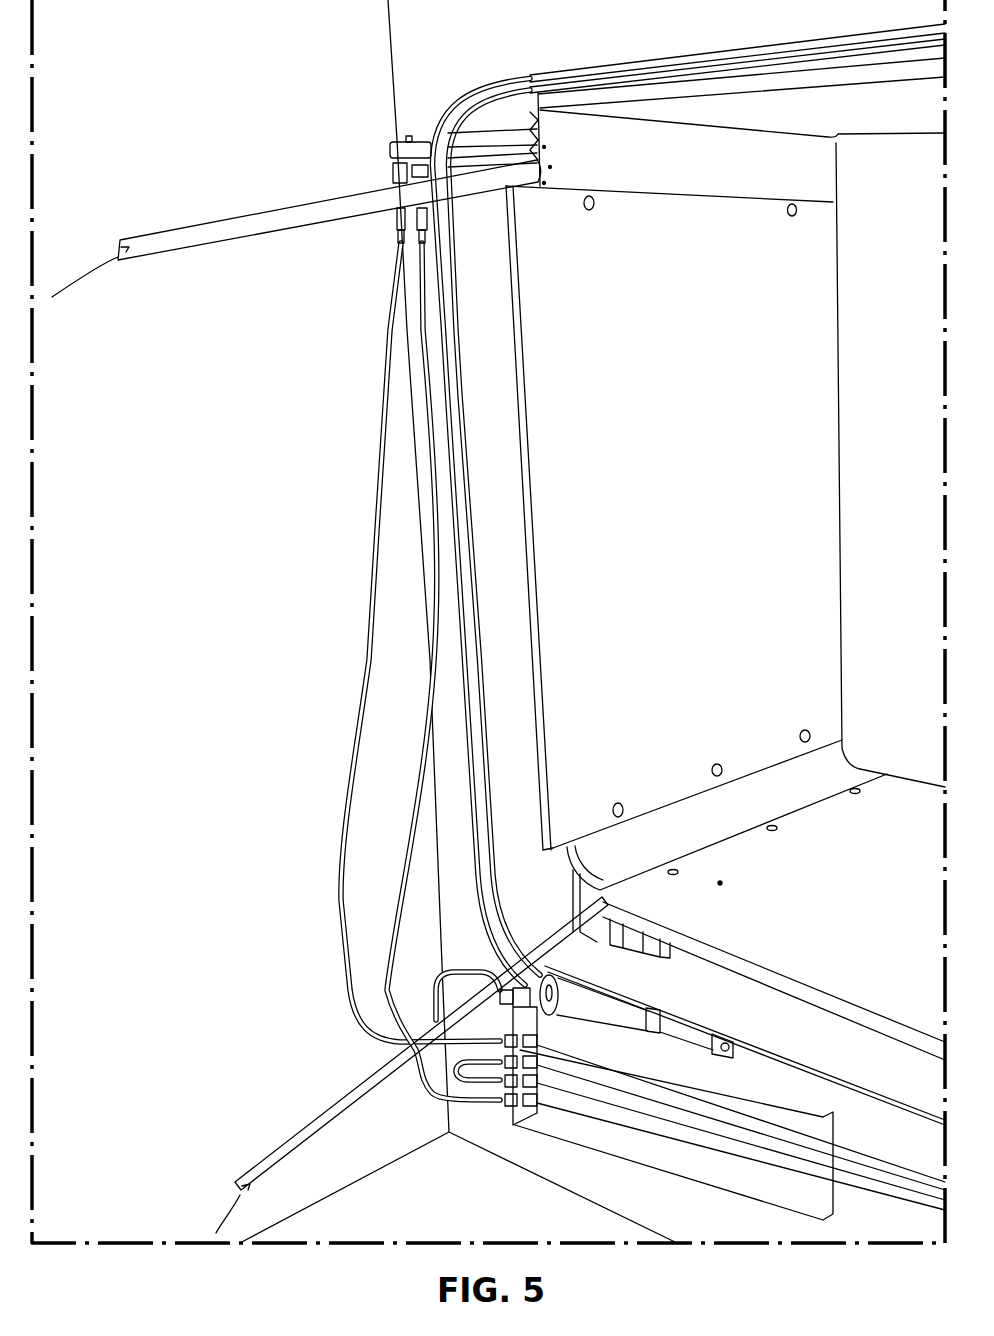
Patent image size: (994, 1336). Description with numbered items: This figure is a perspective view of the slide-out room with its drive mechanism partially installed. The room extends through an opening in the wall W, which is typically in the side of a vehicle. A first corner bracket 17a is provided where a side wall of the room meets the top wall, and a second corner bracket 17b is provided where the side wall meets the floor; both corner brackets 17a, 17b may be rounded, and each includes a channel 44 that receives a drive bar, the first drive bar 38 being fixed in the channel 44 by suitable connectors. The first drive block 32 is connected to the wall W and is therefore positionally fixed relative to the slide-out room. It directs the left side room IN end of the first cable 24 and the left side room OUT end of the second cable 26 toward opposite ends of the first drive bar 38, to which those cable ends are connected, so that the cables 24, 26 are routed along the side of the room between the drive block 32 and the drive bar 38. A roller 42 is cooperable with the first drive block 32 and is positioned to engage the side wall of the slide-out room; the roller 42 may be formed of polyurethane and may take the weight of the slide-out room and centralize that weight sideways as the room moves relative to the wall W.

The first corner bracket 17a is at (672, 162).
The second corner bracket 17b is at (780, 780).
The first cable 24 is at (430, 400).
The second cable 26 is at (377, 500).
The first drive block 32 is at (393, 160).
The first drive bar 38 is at (152, 245).
The roller 42 is at (398, 142).
The channel 44 is at (538, 125).
The wall W is at (448, 820).